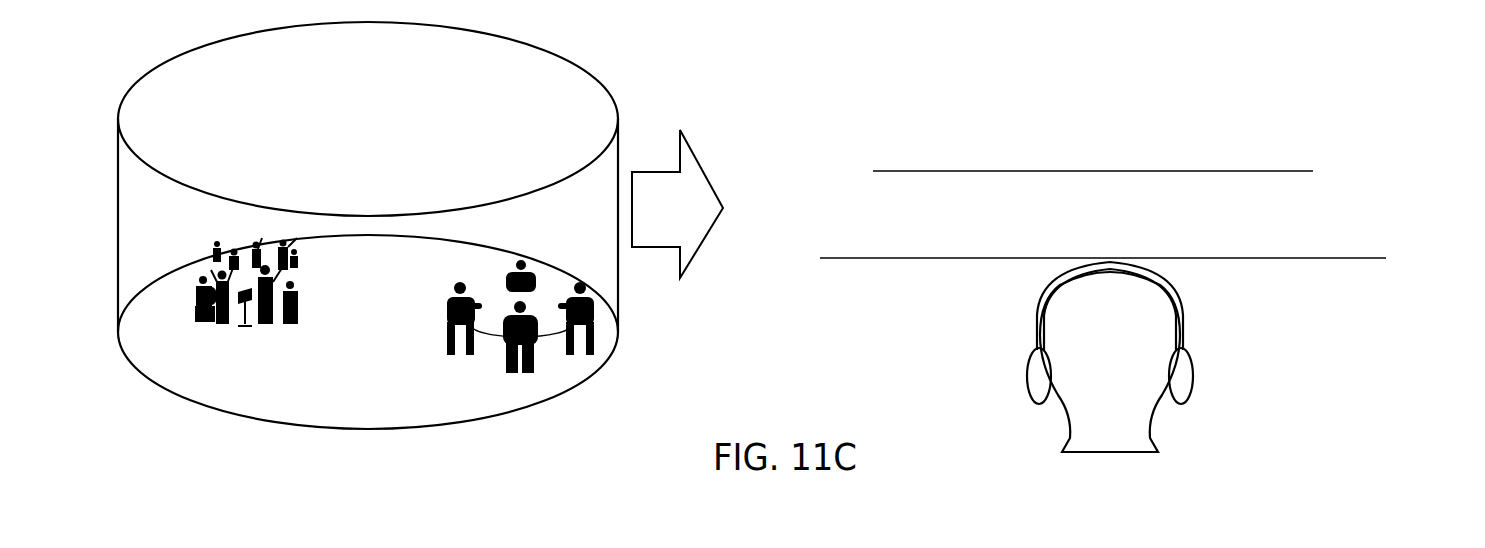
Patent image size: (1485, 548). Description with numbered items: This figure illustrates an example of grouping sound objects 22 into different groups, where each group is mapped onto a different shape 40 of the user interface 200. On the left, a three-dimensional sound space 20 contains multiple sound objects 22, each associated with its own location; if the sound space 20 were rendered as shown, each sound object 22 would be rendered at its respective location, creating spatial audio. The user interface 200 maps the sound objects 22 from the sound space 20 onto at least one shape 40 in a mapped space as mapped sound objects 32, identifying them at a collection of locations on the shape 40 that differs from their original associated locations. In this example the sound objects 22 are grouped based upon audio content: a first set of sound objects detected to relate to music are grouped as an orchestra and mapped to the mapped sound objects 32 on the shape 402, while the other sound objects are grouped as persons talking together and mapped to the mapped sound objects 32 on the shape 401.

The sound space 20 is at (368, 65).
The sound object 22 is at (334, 238).
The user interface 200 is at (1108, 164).
The mapped sound object 32 is at (812, 88).
The shape 40 is at (1140, 184).
The shape 401 is at (1332, 148).
The shape 402 is at (1406, 235).